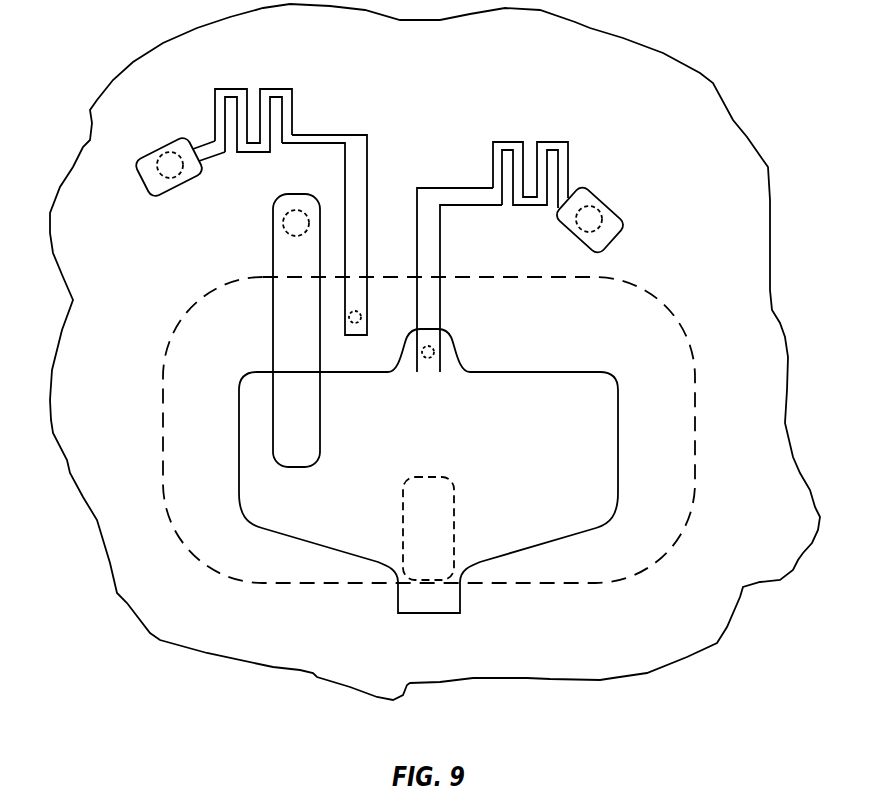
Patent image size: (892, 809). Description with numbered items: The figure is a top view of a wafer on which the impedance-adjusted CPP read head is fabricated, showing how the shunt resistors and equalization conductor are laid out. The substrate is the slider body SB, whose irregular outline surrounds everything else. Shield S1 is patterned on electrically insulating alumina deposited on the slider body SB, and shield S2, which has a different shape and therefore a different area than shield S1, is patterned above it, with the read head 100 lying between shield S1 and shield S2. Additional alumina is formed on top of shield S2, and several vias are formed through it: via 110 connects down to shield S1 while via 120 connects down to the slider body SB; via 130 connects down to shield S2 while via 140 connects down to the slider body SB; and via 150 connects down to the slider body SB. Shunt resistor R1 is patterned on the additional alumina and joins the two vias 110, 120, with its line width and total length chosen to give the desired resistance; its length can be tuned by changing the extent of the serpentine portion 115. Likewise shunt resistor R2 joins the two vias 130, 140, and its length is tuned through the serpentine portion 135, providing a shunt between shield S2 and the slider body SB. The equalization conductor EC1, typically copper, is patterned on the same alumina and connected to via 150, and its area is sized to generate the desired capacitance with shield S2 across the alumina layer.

The slider body SB is at (703, 632).
The shield S1 is at (678, 425).
The shield S2 is at (545, 528).
The read head 100 is at (417, 523).
The equalization conductor EC1 is at (282, 340).
The via 150 is at (293, 217).
The via 120 is at (162, 166).
The serpentine portion 115 is at (290, 83).
The shunt resistor R1 is at (347, 143).
The via 110 is at (355, 323).
The shunt resistor R2 is at (457, 193).
The via 130 is at (428, 358).
The serpentine portion 135 is at (568, 135).
The via 140 is at (590, 208).